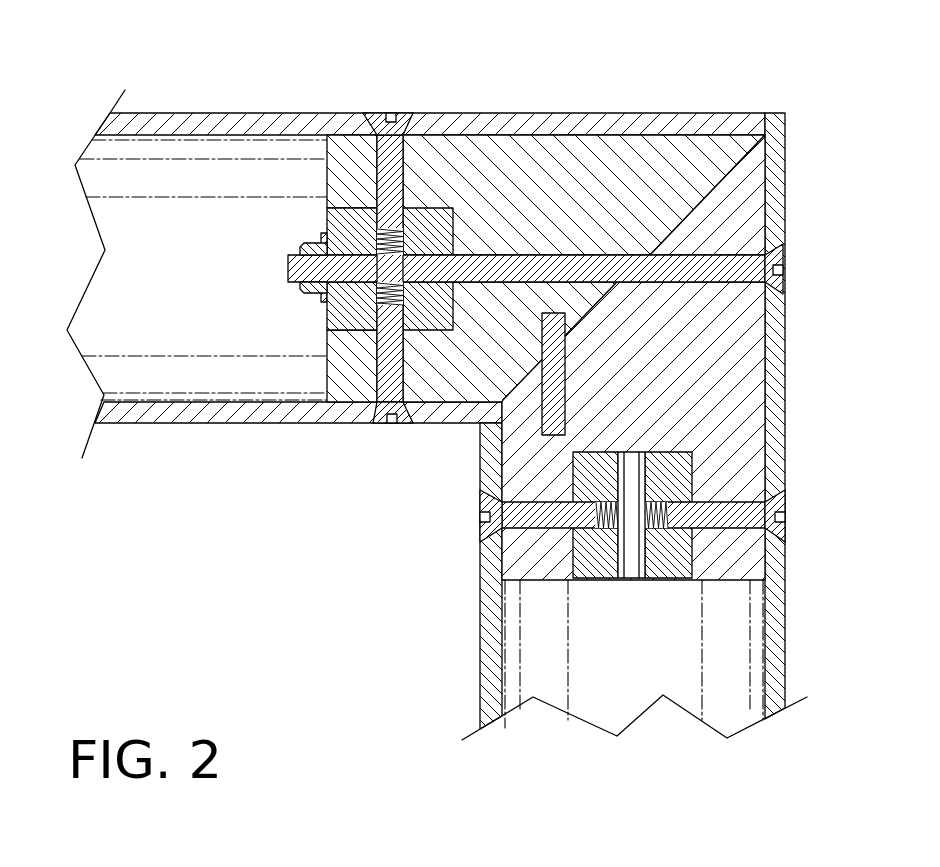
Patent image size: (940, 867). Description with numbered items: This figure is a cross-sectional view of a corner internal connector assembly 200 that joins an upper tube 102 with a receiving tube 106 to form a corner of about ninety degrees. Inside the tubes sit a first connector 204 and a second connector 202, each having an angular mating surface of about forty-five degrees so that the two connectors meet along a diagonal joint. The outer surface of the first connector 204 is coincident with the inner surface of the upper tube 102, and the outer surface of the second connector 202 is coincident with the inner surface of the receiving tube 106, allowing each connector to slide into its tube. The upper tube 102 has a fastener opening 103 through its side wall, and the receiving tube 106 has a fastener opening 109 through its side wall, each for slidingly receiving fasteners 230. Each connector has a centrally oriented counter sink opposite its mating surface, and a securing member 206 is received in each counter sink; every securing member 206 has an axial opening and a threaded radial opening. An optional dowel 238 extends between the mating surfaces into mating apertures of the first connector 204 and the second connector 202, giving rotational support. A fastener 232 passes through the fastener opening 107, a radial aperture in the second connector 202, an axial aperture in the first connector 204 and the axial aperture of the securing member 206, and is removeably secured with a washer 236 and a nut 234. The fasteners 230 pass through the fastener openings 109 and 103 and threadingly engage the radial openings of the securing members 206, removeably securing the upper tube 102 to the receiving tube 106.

The corner internal connector assembly 200 is at (845, 102).
The upper tube 102 is at (228, 112).
The fastener opening 103 is at (365, 123).
The receiving tube 106 is at (777, 653).
The fastener opening 107 is at (778, 223).
The fastener opening 109 is at (780, 537).
The second connector 202 is at (733, 335).
The first connector 204 is at (553, 150).
The securing member 206 is at (328, 312).
The fastener 230 is at (397, 117).
The fastener 232 is at (778, 283).
The nut 234 is at (300, 290).
The washer 236 is at (322, 240).
The dowel 238 is at (502, 455).